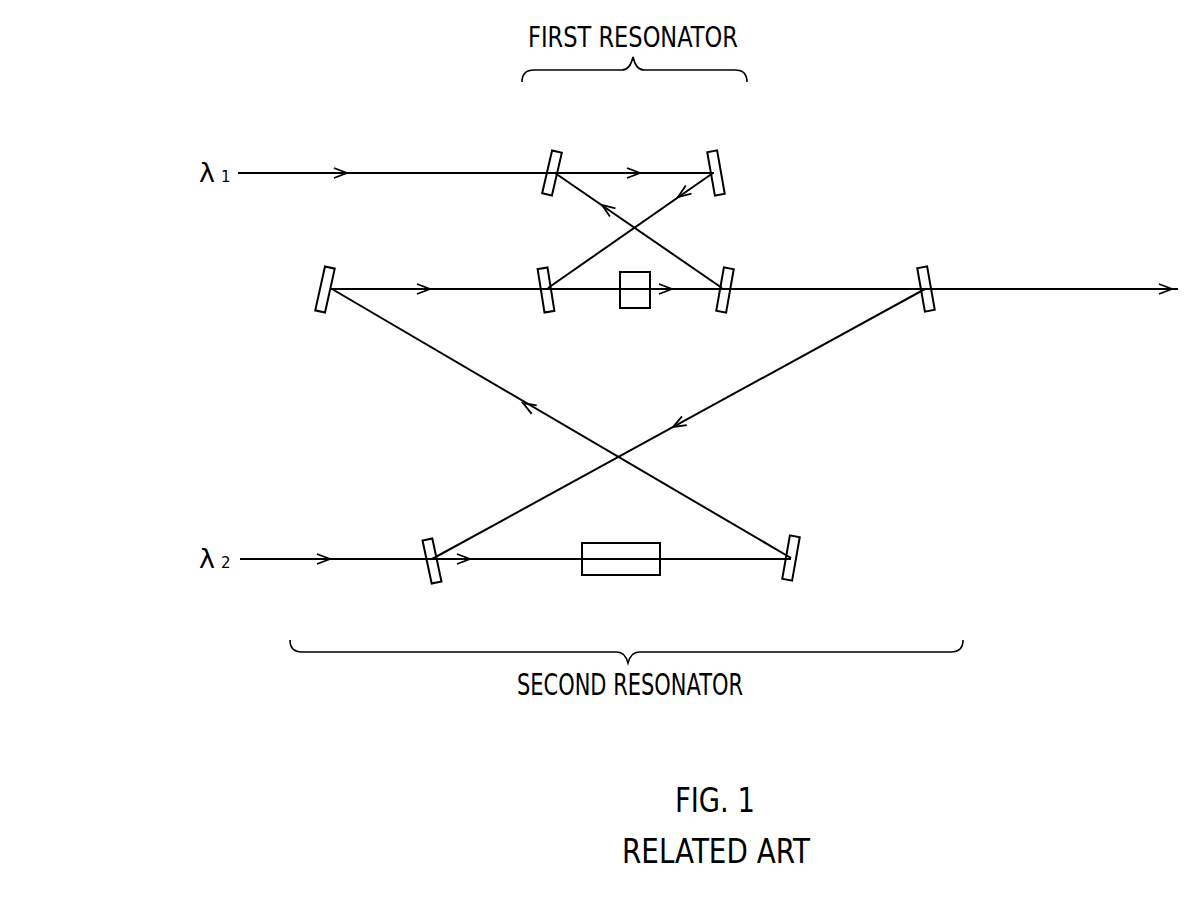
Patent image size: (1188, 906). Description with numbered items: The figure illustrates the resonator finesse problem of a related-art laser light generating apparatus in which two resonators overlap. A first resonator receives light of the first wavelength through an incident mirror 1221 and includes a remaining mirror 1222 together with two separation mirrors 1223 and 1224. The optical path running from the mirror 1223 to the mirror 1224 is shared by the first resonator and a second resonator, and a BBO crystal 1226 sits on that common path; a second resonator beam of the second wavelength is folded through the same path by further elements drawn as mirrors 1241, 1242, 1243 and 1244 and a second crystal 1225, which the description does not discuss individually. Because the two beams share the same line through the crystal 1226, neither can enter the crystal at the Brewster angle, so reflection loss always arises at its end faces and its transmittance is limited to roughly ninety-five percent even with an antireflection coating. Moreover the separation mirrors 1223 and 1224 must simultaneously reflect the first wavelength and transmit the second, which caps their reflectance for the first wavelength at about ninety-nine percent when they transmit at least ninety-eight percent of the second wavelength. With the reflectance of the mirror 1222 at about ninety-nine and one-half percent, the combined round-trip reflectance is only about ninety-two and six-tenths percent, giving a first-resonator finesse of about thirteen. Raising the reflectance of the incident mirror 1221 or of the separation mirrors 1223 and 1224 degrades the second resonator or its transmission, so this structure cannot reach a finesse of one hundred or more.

The incident mirror 1221 is at (556, 150).
The remaining mirror of the first resonator 1222 is at (713, 150).
The separation mirror 1223 is at (546, 313).
The separation mirror 1224 is at (722, 313).
The BBO crystal 1226 is at (634, 309).
The second resonator mirror 1243 is at (321, 313).
The second resonator mirror 1244 is at (928, 312).
The second resonator mirror 1241 is at (434, 584).
The second resonator mirror 1242 is at (789, 582).
The nonlinear optical crystal 1225 is at (620, 576).